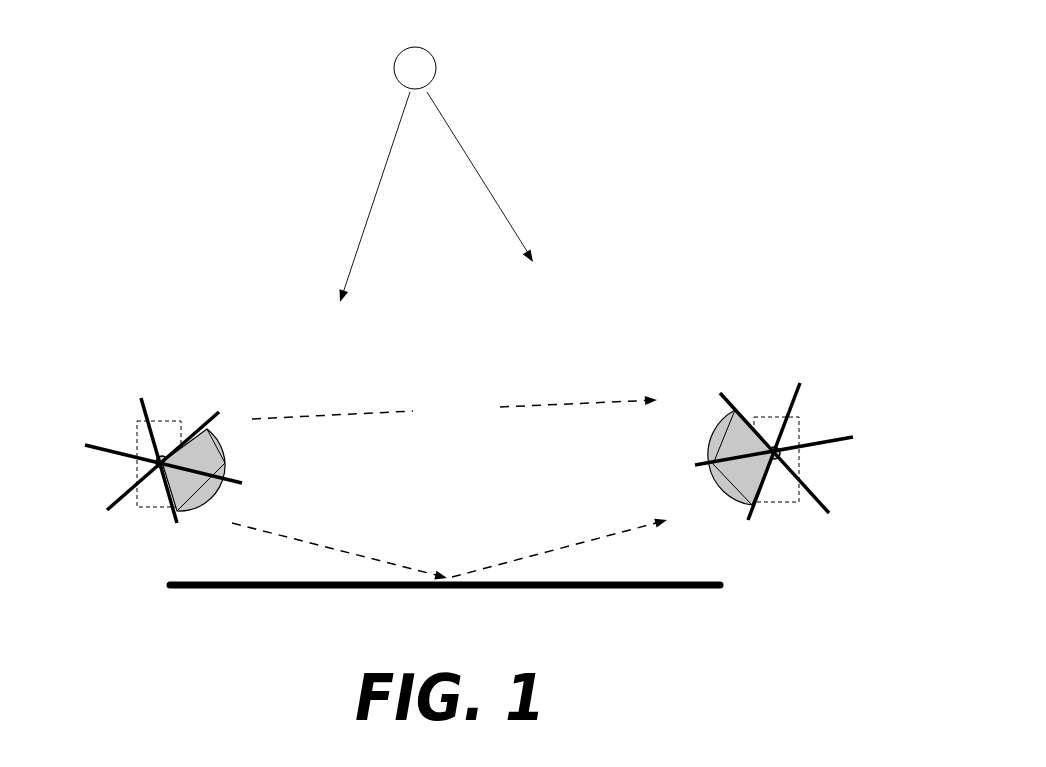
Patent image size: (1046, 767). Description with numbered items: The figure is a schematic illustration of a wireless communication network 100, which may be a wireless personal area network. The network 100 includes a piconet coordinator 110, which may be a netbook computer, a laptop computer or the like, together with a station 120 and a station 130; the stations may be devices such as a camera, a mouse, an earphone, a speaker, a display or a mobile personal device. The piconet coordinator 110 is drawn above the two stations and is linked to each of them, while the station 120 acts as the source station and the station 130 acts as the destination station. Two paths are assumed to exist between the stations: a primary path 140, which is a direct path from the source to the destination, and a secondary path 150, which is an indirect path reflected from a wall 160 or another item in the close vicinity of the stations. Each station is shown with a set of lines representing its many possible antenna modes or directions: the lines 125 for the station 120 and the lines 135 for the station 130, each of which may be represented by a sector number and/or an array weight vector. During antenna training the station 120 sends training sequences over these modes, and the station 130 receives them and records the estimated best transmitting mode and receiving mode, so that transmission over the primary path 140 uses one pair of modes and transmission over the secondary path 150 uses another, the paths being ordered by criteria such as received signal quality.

The wireless communication network 100 is at (663, 221).
The piconet coordinator 110 is at (437, 72).
The station 120 is at (137, 420).
The lines 125 is at (214, 408).
The station 130 is at (802, 417).
The lines 135 is at (797, 377).
The primary path 140 is at (512, 404).
The secondary path 150 is at (368, 557).
The wall 160 is at (657, 593).